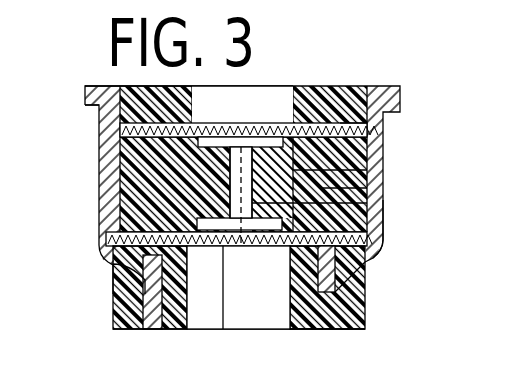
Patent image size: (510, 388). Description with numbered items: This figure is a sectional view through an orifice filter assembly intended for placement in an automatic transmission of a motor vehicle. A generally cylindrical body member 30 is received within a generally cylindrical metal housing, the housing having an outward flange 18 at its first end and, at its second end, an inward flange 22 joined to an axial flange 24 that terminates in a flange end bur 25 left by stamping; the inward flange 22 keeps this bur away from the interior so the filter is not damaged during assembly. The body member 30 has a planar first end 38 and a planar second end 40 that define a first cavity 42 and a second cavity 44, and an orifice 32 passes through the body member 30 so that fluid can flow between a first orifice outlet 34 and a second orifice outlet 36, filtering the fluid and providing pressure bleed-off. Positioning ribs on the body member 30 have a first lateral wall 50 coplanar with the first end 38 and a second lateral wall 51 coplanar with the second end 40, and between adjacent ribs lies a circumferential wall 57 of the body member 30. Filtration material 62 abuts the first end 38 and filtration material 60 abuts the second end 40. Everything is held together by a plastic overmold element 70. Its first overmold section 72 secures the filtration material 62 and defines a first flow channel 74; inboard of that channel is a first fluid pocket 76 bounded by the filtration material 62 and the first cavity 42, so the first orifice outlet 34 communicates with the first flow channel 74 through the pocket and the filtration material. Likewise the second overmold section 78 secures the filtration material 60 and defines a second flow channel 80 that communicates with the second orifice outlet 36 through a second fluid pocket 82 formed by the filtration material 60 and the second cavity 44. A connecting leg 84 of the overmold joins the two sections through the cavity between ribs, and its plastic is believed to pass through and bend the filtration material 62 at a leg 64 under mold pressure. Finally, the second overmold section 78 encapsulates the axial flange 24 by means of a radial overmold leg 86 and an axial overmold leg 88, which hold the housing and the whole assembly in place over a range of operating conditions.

The outward flange 18 is at (402, 88).
The inward flange 22 is at (370, 267).
The axial flange 24 is at (365, 291).
The flange end bur 25 is at (368, 309).
The body member 30 is at (368, 170).
The orifice 32 is at (368, 205).
The first orifice outlet 34 is at (258, 135).
The second orifice outlet 36 is at (241, 292).
The first end 38 is at (160, 160).
The second end 40 is at (165, 210).
The first cavity 42 is at (370, 143).
The second cavity 44 is at (372, 244).
The first lateral wall 50 is at (160, 137).
The second lateral wall 51 is at (135, 226).
The circumferential wall 57 is at (368, 188).
The filtration material 60 is at (112, 255).
The filtration material 62 is at (120, 125).
The leg 64 is at (368, 125).
The overmold element 70 is at (160, 118).
The first overmold section 72 is at (97, 107).
The first flow channel 74 is at (285, 100).
The first fluid pocket 76 is at (278, 104).
The second overmold section 78 is at (335, 332).
The second flow channel 80 is at (208, 294).
The second fluid pocket 82 is at (227, 294).
The connecting leg 84 is at (383, 228).
The radial overmold leg 86 is at (142, 327).
The axial overmold leg 88 is at (122, 289).